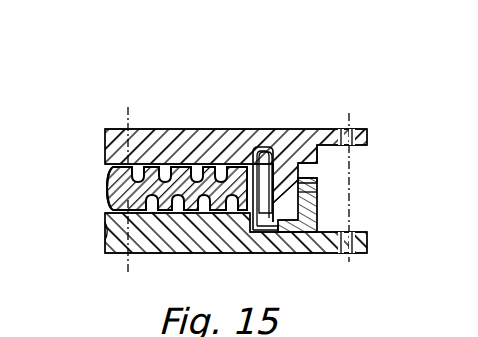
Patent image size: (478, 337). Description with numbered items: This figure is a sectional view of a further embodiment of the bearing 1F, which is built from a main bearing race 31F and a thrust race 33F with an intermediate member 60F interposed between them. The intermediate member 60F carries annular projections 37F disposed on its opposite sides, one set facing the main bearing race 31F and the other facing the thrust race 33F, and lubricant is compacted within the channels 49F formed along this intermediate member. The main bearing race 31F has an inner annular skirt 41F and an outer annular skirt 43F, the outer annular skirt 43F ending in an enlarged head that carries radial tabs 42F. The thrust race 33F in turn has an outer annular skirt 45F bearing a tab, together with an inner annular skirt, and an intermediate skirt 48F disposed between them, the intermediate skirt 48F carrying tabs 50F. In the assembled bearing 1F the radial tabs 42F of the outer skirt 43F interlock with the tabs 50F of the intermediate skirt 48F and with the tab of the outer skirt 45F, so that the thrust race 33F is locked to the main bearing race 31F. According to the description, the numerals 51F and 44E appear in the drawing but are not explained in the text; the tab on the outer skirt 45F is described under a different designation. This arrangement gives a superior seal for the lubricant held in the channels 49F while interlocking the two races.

The bearing 1F is at (238, 70).
The main bearing race 31F is at (137, 138).
The thrust race 33F is at (126, 254).
The annular projections 37F is at (183, 175).
The channels 49F is at (200, 173).
The intermediate member 60F is at (108, 168).
The inner annular skirt 41F is at (245, 152).
The intermediate skirt 48F is at (256, 232).
The radial tabs 42F is at (286, 226).
The outer annular skirt 43F is at (297, 150).
The tabs 50F is at (264, 146).
The bracket tab 51F is at (308, 170).
The bracket rib 44E is at (317, 192).
The outer annular skirt 45F is at (318, 207).